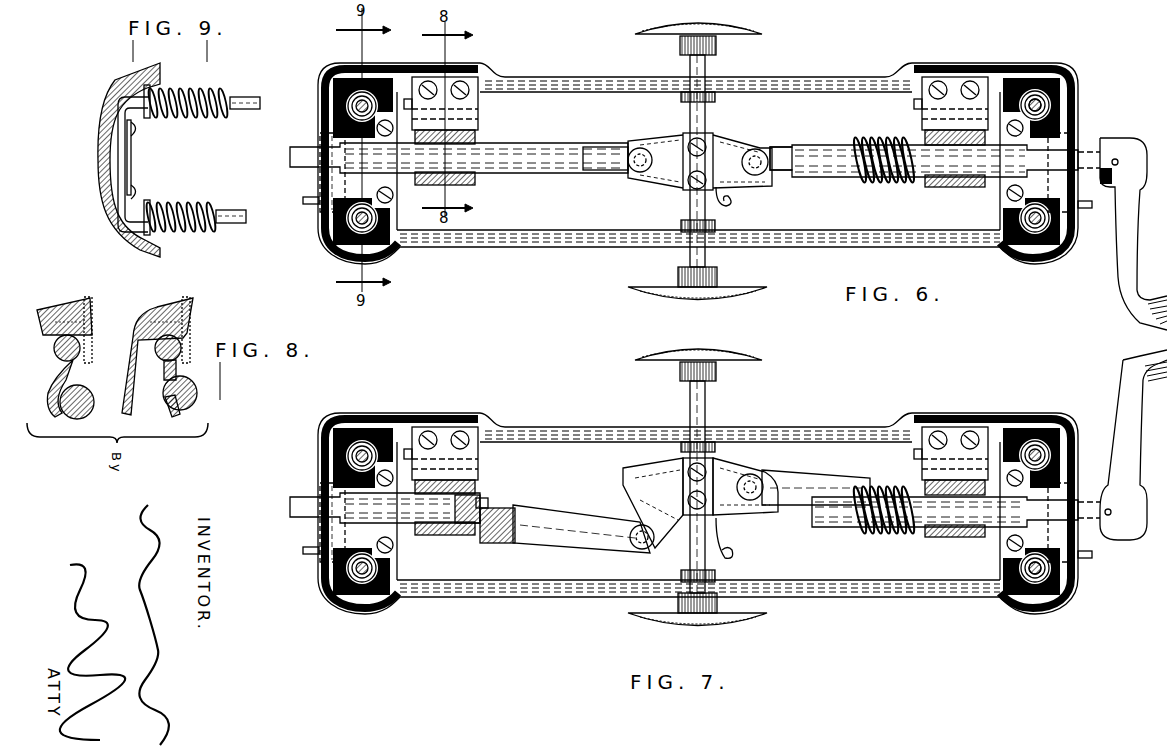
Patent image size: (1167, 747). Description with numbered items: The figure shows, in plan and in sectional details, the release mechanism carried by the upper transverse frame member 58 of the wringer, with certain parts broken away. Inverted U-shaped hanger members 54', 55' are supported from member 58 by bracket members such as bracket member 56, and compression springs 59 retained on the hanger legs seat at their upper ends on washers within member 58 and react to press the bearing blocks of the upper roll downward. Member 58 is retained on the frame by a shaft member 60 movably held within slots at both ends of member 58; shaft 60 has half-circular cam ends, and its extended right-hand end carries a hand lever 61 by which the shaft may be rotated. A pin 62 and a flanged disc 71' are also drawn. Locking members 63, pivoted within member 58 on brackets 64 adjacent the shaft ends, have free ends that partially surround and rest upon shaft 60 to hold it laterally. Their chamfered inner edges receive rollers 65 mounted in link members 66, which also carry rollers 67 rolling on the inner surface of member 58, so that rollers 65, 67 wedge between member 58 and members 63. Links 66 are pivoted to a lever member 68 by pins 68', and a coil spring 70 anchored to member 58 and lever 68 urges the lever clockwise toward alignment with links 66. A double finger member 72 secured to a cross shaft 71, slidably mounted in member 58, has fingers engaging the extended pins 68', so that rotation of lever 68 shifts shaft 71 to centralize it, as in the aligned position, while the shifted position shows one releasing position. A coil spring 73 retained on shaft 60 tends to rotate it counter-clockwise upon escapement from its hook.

In FIG. 6, the inverted U-shaped hanger member 54' is at (685, 203).
In FIG. 7, the inverted U-shaped hanger member 54' is at (674, 542).
In FIG. 9, the inverted U-shaped hanger member 54' is at (243, 147).
In FIG. 6, the inverted U-shaped hanger member 55' is at (1043, 74).
In FIG. 7, the inverted U-shaped hanger member 55' is at (1029, 599).
In FIG. 6, the bracket member 56 is at (398, 232).
In FIG. 7, the bracket member 56 is at (397, 590).
In FIG. 9, the bracket member 56 is at (131, 160).
In FIG. 6, the upper transverse frame member 58 is at (580, 248).
In FIG. 7, the upper transverse frame member 58 is at (833, 597).
In FIG. 9, the upper transverse frame member 58 is at (99, 150).
In FIG. 8, the upper transverse frame member 58 is at (58, 308).
In FIG. 6, the compression spring 59 is at (350, 106).
In FIG. 7, the compression spring 59 is at (366, 449).
In FIG. 9, the compression spring 59 is at (186, 92).
In FIG. 6, the shaft member 60 is at (578, 148).
In FIG. 7, the shaft member 60 is at (455, 527).
In FIG. 8, the shaft member 60 is at (84, 392).
In FIG. 6, the hand lever 61 is at (1122, 250).
In FIG. 7, the hand lever 61 is at (1125, 393).
In FIG. 6, the pin 62 is at (314, 202).
In FIG. 7, the pin 62 is at (314, 551).
In FIG. 6, the locking member 63 is at (470, 186).
In FIG. 7, the locking member 63 is at (472, 488).
In FIG. 8, the locking member 63 is at (50, 385).
In FIG. 6, the bracket 64 is at (479, 107).
In FIG. 7, the bracket 64 is at (478, 455).
In FIG. 8, the bracket 64 is at (90, 350).
In FIG. 7, the roller 65 is at (498, 540).
In FIG. 6, the link member 66 is at (585, 147).
In FIG. 7, the link member 66 is at (528, 512).
In FIG. 7, the roller 67 is at (483, 503).
In FIG. 6, the lever member 68 is at (700, 181).
In FIG. 7, the lever member 68 is at (700, 517).
In FIG. 6, the pin 68' is at (701, 164).
In FIG. 7, the pin 68' is at (698, 513).
In FIG. 6, the coil spring 70 is at (732, 204).
In FIG. 7, the coil spring 70 is at (731, 538).
In FIG. 6, the cross shaft 71 is at (717, 161).
In FIG. 7, the cross shaft 71 is at (714, 487).
In FIG. 6, the disc 71' is at (706, 166).
In FIG. 7, the disc 71' is at (708, 493).
In FIG. 6, the double finger member 72 is at (680, 140).
In FIG. 7, the double finger member 72 is at (718, 465).
In FIG. 6, the coil spring 73 is at (884, 183).
In FIG. 7, the coil spring 73 is at (881, 537).